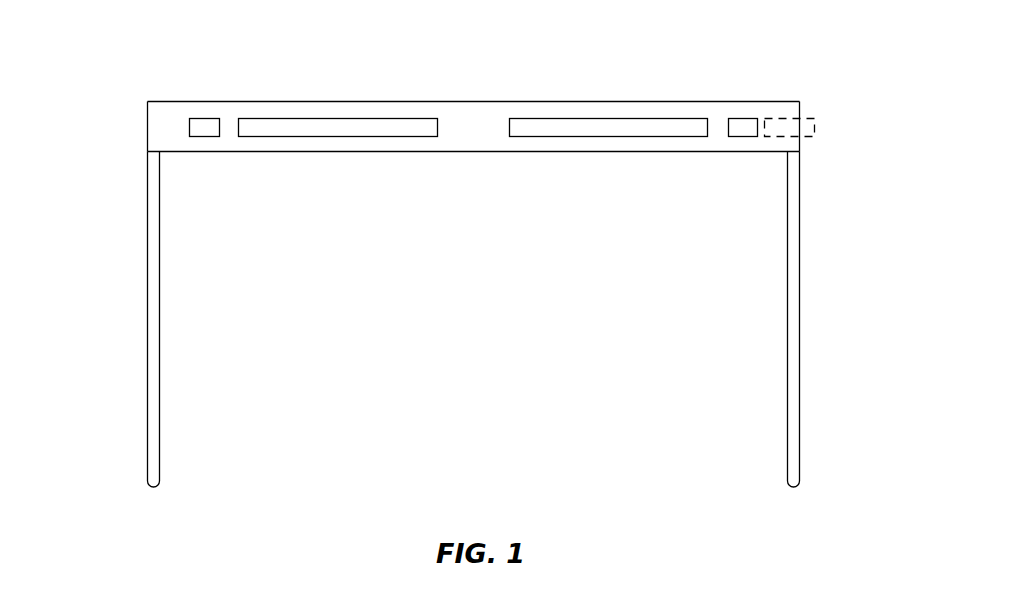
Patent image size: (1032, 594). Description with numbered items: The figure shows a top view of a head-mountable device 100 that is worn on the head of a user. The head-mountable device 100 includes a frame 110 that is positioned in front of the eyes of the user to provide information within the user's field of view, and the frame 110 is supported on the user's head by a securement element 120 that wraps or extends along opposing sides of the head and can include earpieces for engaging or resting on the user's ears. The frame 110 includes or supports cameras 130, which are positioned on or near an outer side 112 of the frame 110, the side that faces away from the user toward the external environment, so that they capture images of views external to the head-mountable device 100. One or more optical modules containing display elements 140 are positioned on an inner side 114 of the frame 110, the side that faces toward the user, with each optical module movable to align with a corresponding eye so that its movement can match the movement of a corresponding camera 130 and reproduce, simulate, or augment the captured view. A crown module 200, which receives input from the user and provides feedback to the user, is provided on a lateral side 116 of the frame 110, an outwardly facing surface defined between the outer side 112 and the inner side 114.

The head-mountable device 100 is at (131, 51).
The frame 110 is at (518, 127).
The outer side 112 is at (525, 101).
The inner side 114 is at (477, 152).
The lateral side 116 is at (801, 147).
The securement element 120 is at (147, 318).
The camera 130 is at (202, 118).
The display element 140 is at (332, 118).
The crown module 200 is at (816, 127).